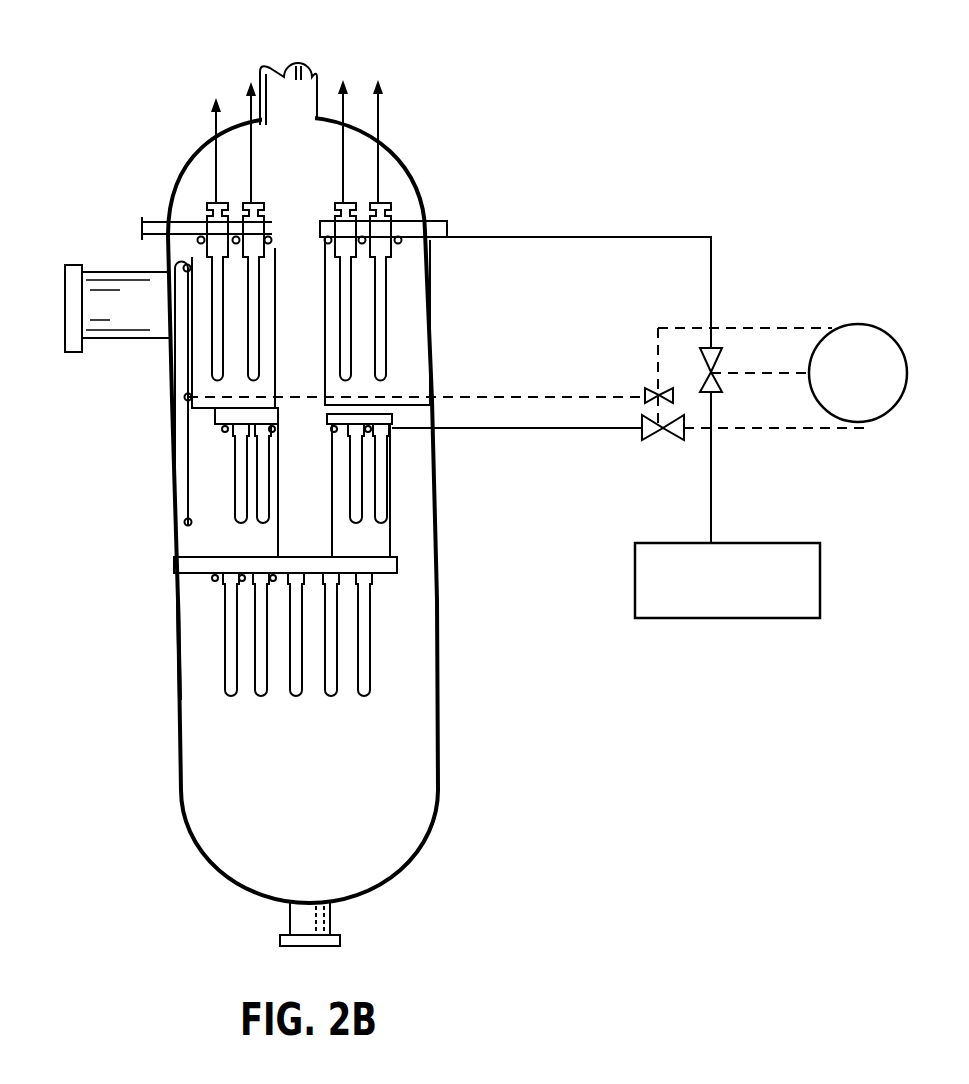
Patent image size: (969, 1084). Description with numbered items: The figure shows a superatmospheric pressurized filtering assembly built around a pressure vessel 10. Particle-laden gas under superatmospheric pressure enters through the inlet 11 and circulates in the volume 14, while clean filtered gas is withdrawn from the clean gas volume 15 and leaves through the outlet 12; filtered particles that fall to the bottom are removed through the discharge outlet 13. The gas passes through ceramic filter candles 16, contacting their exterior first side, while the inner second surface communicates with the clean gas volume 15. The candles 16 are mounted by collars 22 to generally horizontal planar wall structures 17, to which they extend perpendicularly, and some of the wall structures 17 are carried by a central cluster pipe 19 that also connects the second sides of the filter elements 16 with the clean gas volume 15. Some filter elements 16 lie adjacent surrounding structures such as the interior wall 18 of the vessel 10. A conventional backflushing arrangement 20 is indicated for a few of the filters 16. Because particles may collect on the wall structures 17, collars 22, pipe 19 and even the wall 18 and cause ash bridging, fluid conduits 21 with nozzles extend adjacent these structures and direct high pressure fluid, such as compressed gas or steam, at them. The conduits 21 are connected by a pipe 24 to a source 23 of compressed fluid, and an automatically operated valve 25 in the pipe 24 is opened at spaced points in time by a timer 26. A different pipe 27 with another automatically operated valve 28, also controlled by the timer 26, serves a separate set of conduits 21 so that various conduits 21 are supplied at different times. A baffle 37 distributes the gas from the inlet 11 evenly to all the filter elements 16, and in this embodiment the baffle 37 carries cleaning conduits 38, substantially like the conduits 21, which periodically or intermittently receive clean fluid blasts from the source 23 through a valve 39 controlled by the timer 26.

The pressure vessel 10 is at (402, 198).
The inlet 11 is at (100, 268).
The outlet 12 is at (318, 82).
The discharge outlet 13 is at (330, 928).
The volume 14 is at (333, 763).
The clean gas volume 15 is at (316, 176).
The ceramic filter candles 16 is at (387, 366).
The planar wall structures 17 is at (432, 248).
The interior wall 18 is at (180, 662).
The central cluster pipe 19 is at (330, 480).
The filter backflushing arrangement 20 is at (206, 83).
The fluid conduits 21 is at (268, 245).
The collars 22 is at (255, 207).
The source of compressed fluid 23 is at (635, 595).
The pipe 24 is at (618, 236).
The automatically operated valve 25 is at (735, 312).
The timer 26 is at (840, 404).
The pipe 27 is at (598, 432).
The automatically operated valve 28 is at (676, 440).
The baffle 37 is at (182, 445).
The cleaning conduits 38 is at (173, 258).
The valve 39 is at (643, 415).